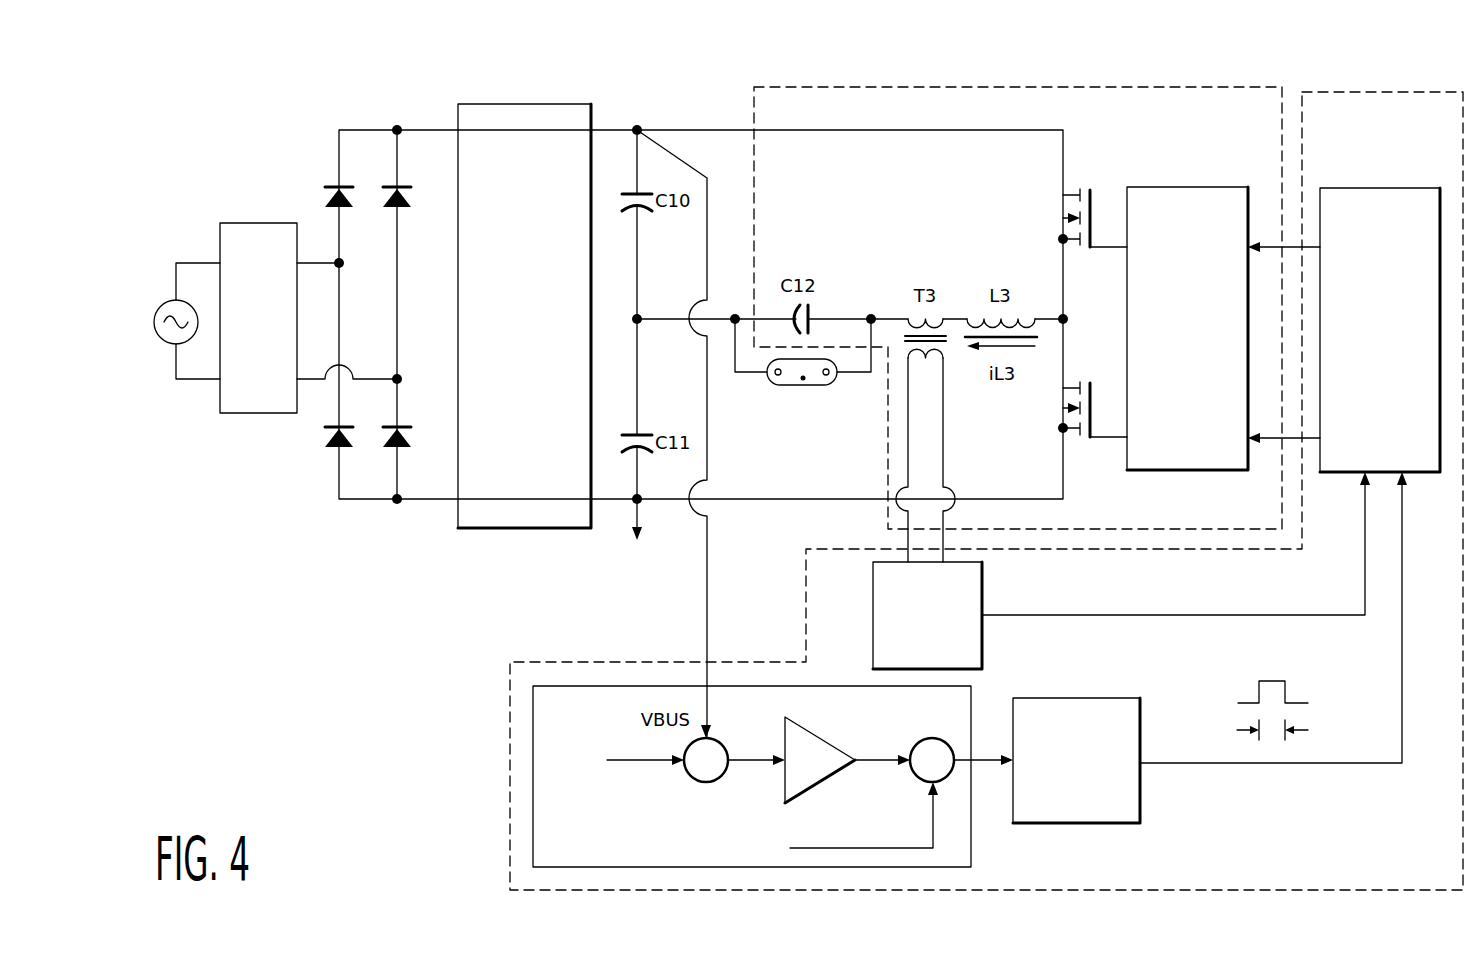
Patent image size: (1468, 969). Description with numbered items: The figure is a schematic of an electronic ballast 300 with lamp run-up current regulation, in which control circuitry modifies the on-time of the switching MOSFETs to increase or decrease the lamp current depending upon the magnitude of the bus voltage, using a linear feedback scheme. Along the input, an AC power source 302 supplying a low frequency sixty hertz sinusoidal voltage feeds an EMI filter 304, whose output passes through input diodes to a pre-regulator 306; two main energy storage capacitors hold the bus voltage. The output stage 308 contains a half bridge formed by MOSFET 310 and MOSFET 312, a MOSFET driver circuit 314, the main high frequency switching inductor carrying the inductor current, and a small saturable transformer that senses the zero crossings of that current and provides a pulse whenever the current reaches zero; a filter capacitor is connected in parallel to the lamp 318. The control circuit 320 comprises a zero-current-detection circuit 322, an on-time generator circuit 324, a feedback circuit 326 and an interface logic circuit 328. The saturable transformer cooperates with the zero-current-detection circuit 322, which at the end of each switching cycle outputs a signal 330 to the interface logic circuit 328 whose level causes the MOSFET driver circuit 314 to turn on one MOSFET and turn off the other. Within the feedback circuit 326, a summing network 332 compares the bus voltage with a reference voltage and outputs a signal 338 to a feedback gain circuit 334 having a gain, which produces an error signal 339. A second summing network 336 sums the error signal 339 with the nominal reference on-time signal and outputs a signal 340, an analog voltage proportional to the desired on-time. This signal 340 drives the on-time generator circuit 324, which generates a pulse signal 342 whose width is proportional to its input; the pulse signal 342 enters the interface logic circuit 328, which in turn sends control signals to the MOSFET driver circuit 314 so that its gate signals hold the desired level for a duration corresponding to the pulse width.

The electronic ballast 300 is at (342, 658).
The AC power source 302 is at (166, 345).
The EMI filter 304 is at (250, 413).
The pre-regulator 306 is at (523, 528).
The output or driver stage 308 is at (752, 112).
The MOSFET 310 is at (1092, 192).
The MOSFET 312 is at (1072, 434).
The MOSFET driver circuit 314 is at (1185, 187).
The lamp 318 is at (790, 386).
The control circuit 320 is at (510, 772).
The zero-current-detection circuit 322 is at (982, 585).
The on-time generator circuit 324 is at (1080, 824).
The feedback circuit 326 is at (971, 712).
The interface logic circuit 328 is at (1378, 188).
The signal 330 is at (1168, 617).
The summing network 332 is at (698, 783).
The feedback gain circuit 334 is at (822, 797).
The summing network 336 is at (925, 740).
The signal 338 is at (765, 757).
The error signal 339 is at (870, 765).
The signal 340 is at (985, 765).
The pulse signal 342 is at (1262, 765).